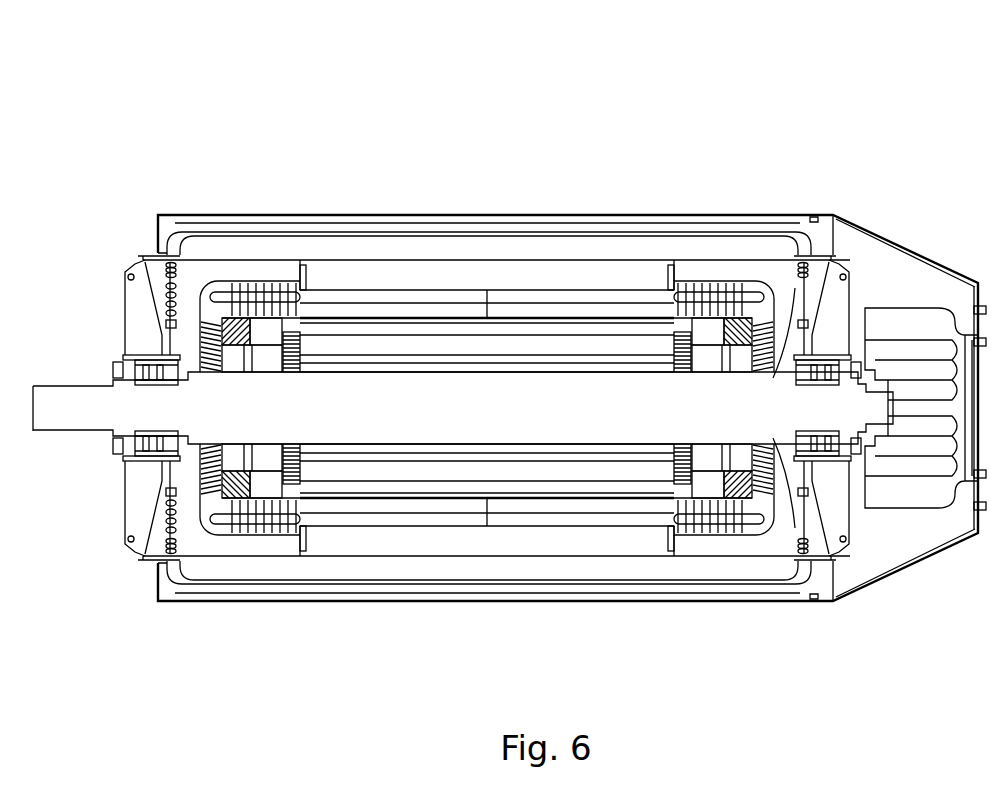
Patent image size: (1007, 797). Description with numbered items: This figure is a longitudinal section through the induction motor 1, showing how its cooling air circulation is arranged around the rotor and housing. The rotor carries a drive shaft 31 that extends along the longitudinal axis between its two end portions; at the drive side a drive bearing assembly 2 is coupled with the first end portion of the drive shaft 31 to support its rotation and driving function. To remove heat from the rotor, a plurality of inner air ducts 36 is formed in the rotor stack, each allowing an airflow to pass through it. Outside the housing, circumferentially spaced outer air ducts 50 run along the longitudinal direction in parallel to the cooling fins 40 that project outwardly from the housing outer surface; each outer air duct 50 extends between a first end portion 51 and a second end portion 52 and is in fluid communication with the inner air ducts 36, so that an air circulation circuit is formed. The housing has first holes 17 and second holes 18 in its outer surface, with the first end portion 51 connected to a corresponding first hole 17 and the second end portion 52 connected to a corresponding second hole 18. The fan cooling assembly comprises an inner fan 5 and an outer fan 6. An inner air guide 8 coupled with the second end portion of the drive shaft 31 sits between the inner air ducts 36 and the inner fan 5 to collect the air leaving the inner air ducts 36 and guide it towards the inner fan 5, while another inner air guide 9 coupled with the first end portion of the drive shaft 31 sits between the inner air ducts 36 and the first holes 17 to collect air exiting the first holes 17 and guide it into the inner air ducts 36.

The induction motor 1 is at (548, 160).
The drive bearing assembly 2 is at (443, 276).
The inner fan 5 is at (783, 290).
The outer fan 6 is at (915, 365).
The inner air guide 8 is at (704, 466).
The inner air guide 9 is at (240, 520).
The first holes 17 is at (165, 290).
The second holes 18 is at (853, 228).
The drive shaft 31 is at (527, 405).
The inner air ducts 36 is at (362, 350).
The cooling fins 40 is at (403, 245).
The outer air ducts 50 is at (665, 218).
The first end portion 51 is at (180, 220).
The second end portion 52 is at (797, 230).